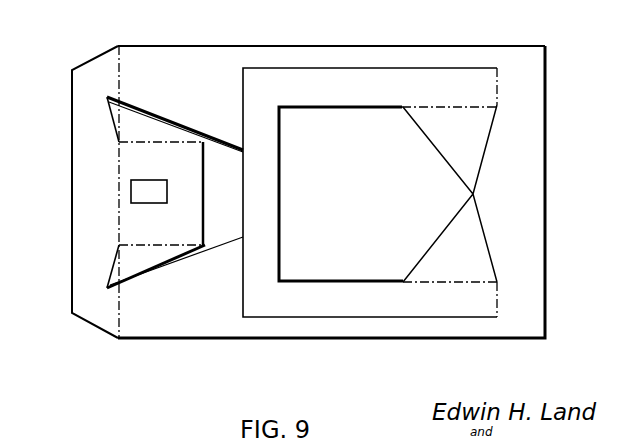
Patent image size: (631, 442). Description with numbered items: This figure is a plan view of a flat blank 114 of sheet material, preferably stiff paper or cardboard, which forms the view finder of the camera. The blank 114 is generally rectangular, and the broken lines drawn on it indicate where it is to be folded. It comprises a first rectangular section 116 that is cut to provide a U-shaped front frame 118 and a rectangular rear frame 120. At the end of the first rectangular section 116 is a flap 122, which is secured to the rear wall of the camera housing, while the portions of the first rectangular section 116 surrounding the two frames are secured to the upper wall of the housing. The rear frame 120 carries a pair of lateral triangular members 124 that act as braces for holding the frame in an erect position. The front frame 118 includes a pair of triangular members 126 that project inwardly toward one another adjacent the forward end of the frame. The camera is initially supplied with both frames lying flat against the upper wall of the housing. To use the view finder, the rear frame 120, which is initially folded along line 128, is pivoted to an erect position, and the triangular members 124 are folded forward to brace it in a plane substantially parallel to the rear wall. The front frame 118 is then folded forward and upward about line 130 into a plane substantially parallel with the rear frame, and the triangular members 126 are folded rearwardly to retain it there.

The blank 114 is at (352, 342).
The first rectangular section 116 is at (333, 55).
The U-shaped front frame 118 is at (331, 98).
The rectangular rear frame 120 is at (176, 168).
The flap 122 is at (80, 169).
The lateral triangular members 124 is at (150, 128).
The triangular members 126 is at (433, 143).
The fold line 128 is at (119, 218).
The fold line 130 is at (497, 88).